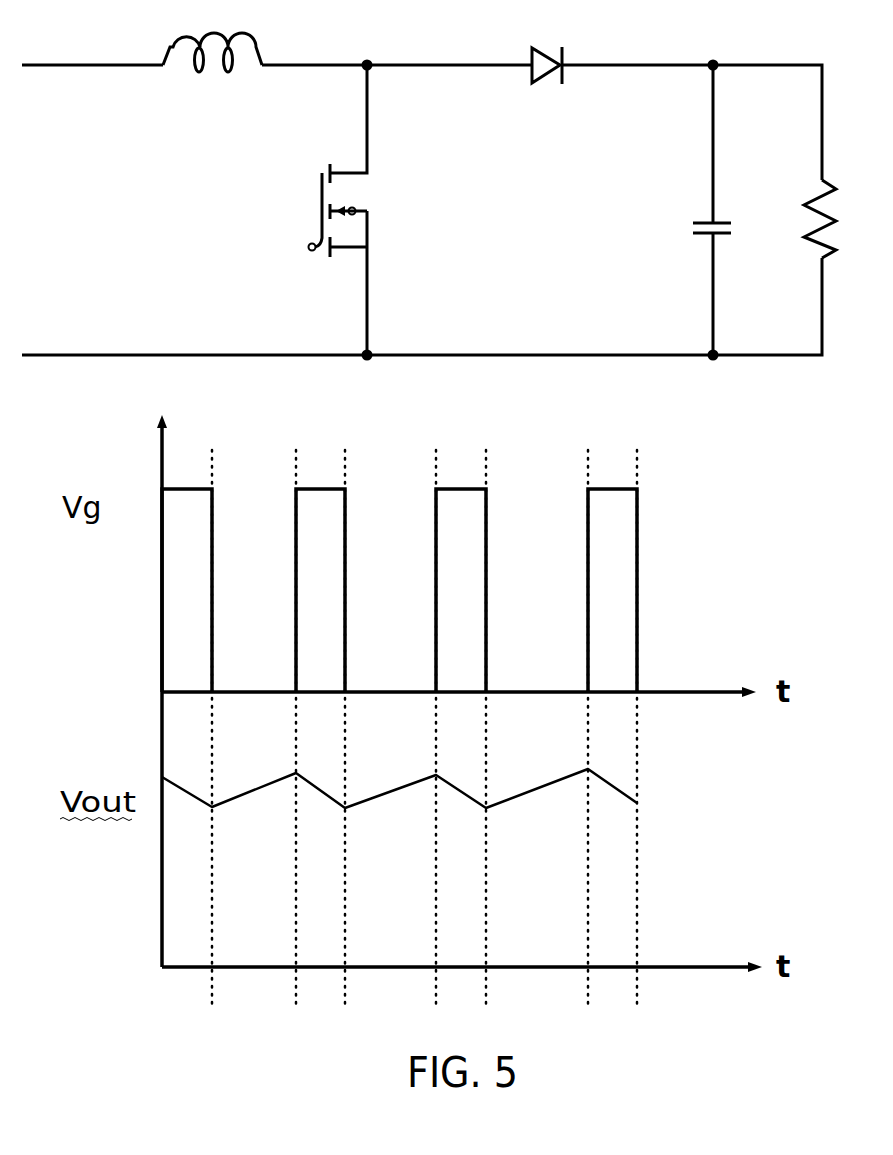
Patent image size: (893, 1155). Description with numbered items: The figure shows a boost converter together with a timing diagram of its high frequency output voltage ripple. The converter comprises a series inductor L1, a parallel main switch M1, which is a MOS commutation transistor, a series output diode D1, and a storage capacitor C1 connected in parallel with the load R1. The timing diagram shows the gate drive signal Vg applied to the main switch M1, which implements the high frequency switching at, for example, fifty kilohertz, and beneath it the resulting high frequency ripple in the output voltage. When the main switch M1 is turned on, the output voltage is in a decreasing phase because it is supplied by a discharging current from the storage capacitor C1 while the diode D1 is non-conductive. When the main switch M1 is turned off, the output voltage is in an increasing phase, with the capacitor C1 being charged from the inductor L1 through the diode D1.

The series inductor L1 is at (212, 43).
The parallel main switch M1 is at (360, 210).
The series output diode D1 is at (546, 50).
The storage capacitor C1 is at (722, 211).
The load R1 is at (839, 219).